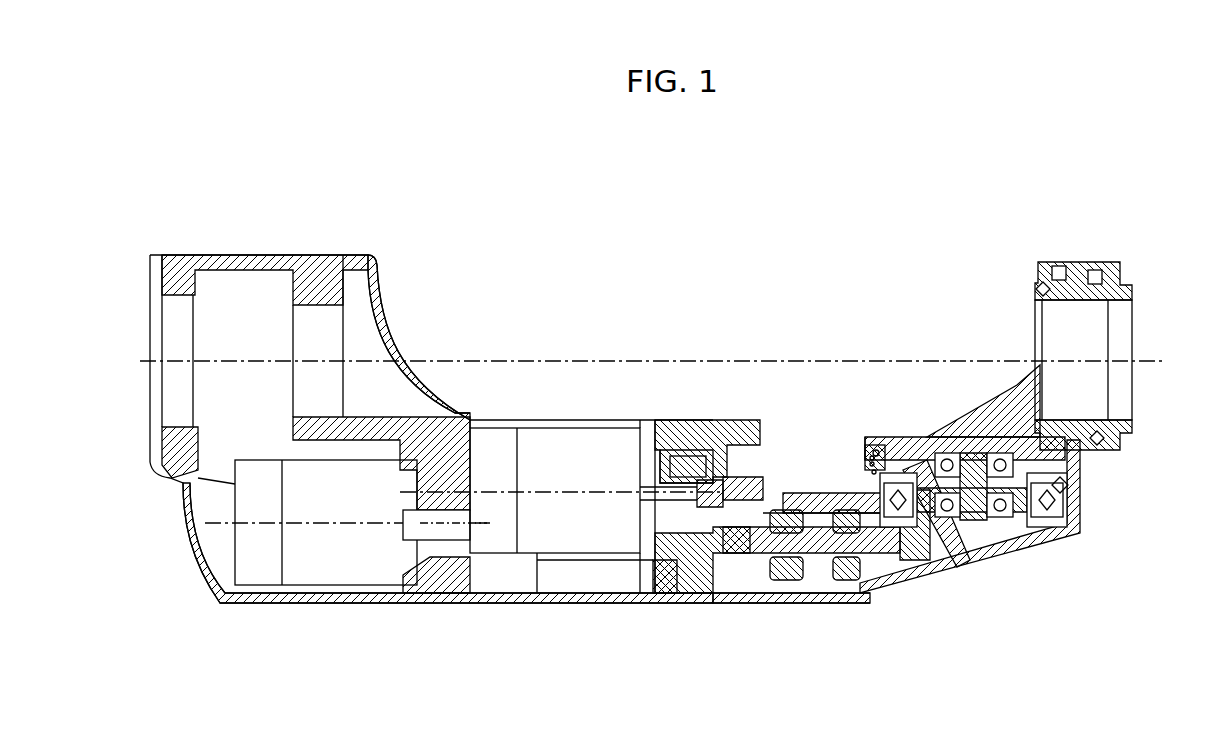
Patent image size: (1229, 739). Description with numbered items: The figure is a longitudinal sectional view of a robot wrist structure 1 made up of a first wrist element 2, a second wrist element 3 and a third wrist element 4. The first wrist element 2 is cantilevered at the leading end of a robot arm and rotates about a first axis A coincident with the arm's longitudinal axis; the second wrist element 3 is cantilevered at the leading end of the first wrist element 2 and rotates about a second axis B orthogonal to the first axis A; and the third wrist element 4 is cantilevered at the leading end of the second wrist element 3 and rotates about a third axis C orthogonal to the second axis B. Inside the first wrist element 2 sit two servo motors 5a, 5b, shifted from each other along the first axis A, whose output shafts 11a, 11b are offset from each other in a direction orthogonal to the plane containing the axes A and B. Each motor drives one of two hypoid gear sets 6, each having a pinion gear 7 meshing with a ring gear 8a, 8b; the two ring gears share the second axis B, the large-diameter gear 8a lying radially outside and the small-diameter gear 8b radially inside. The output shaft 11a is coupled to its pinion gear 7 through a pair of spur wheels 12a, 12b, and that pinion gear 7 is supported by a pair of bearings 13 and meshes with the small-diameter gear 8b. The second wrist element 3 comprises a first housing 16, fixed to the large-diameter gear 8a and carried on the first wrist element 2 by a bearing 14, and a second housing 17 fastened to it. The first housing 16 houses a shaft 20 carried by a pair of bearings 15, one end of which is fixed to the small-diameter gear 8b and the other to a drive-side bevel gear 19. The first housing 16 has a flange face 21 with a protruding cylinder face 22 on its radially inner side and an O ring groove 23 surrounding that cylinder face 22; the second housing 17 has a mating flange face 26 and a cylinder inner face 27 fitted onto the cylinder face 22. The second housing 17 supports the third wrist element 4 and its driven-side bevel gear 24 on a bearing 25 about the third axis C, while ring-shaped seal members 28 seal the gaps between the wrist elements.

The robot wrist structure 1 is at (712, 250).
The first wrist element 2 is at (456, 483).
The second wrist element 3 is at (947, 475).
The third wrist element 4 is at (1101, 351).
The servo motor 5a is at (536, 556).
The servo motor 5b is at (333, 588).
The hypoid gear set 6 is at (844, 585).
The pinion gear 7 is at (945, 583).
The ring gear 8a is at (872, 585).
The ring gear 8b is at (920, 585).
The output shaft 11a is at (662, 446).
The output shaft 11b is at (443, 545).
The spur wheel 12a is at (731, 425).
The spur wheel 12b is at (720, 598).
The bearing 13 is at (787, 583).
The bearing 14 is at (1076, 533).
The bearing 15 is at (997, 432).
The first housing 16 is at (952, 563).
The second housing 17 is at (960, 437).
The drive-side bevel gear 19 is at (912, 437).
The shaft 20 is at (1008, 562).
The flange face 21 is at (870, 463).
The cylinder face 22 is at (876, 452).
The O ring groove 23 is at (870, 456).
The driven-side bevel gear 24 is at (1057, 262).
The bearing 25 is at (1097, 262).
The flange face 26 is at (872, 472).
The cylinder inner face 27 is at (880, 435).
The seal member 28 is at (1037, 282).
The first axis A is at (243, 360).
The second axis B is at (988, 578).
The third axis C is at (1158, 364).